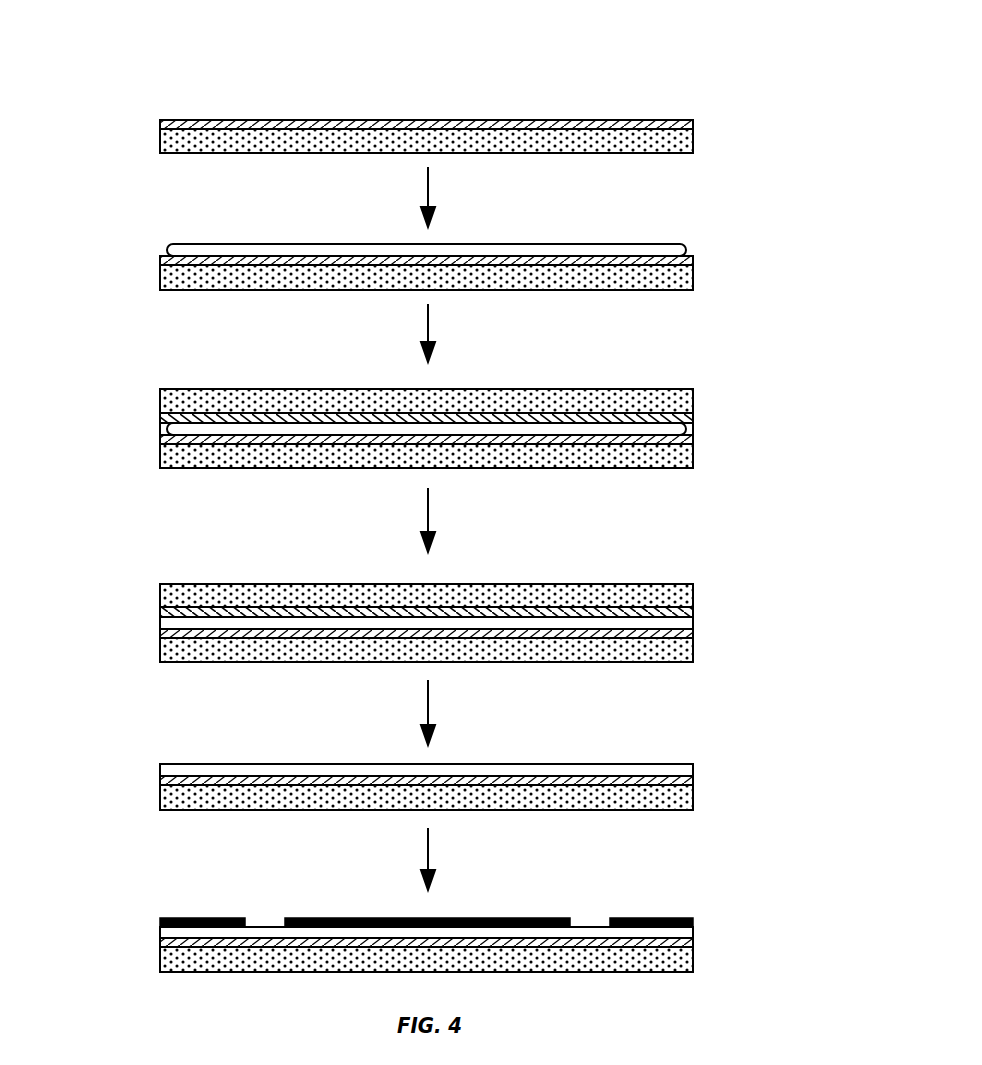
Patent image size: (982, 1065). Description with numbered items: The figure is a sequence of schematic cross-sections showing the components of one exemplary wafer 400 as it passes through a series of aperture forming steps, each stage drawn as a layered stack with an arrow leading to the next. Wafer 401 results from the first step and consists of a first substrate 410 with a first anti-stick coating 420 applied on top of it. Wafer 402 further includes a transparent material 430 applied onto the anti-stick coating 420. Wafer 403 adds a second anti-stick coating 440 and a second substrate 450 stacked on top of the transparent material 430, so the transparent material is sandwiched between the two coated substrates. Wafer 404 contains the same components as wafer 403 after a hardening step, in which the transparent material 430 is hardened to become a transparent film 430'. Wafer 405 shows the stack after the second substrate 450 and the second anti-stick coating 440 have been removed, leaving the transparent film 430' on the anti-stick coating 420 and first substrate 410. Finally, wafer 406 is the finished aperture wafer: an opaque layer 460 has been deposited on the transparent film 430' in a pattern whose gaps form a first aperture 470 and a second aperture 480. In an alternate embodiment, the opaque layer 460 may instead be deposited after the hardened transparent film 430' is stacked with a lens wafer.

The wafer 400 is at (151, 80).
The wafer 401 is at (716, 101).
The wafer 402 is at (716, 220).
The wafer 403 is at (716, 366).
The wafer 404 is at (716, 561).
The wafer 405 is at (716, 740).
The aperture wafer 406 is at (715, 895).
The first substrate 410 is at (160, 143).
The first anti-stick coating 420 is at (160, 124).
The transparent material 430 is at (387, 339).
The transparent film 430' is at (388, 777).
The second anti-stick coating 440 is at (160, 418).
The second substrate 450 is at (160, 397).
The opaque layer 460 is at (192, 918).
The first aperture 470 is at (263, 893).
The second aperture 480 is at (582, 893).